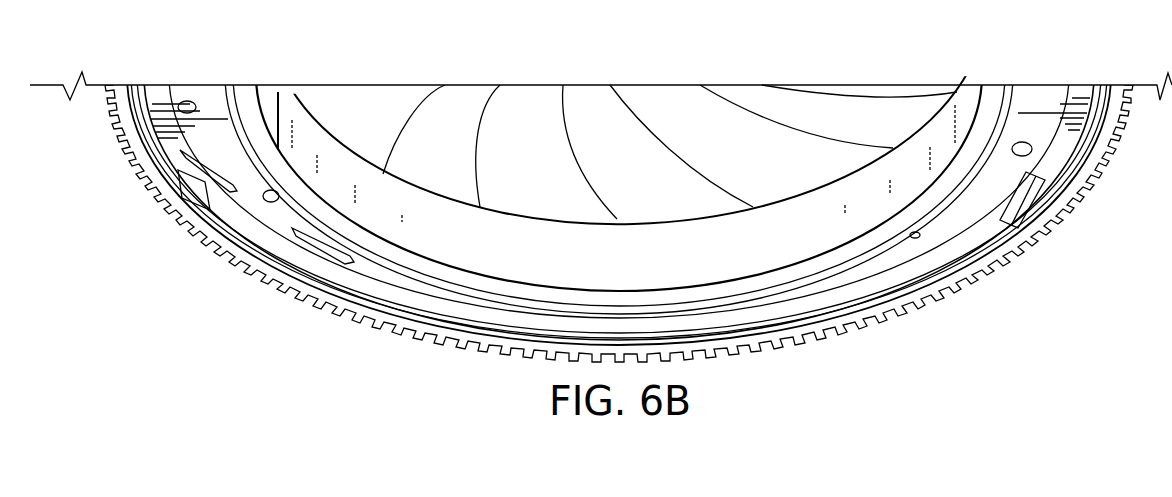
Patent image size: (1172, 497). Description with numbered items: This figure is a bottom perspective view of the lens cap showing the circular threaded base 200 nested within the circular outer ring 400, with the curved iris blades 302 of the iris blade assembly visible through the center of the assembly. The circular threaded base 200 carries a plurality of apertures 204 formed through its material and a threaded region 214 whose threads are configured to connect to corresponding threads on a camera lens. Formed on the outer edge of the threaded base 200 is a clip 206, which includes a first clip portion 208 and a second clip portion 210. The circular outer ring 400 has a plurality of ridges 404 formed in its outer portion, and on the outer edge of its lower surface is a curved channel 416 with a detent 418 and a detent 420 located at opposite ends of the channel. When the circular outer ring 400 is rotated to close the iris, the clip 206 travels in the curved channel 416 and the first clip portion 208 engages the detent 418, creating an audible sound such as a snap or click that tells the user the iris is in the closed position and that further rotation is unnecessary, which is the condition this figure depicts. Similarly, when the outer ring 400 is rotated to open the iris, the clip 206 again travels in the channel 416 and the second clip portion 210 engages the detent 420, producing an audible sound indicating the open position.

The circular threaded base 200 is at (218, 112).
The apertures 204 is at (1031, 156).
The clip 206 is at (240, 260).
The first clip portion 208 is at (183, 160).
The second clip portion 210 is at (318, 262).
The threaded region 214 is at (599, 273).
The curved iris blades 302 is at (717, 161).
The circular outer ring 400 is at (889, 316).
The ridges 404 is at (793, 340).
The curved channel 416 is at (444, 310).
The detent 418 is at (190, 211).
The detent 420 is at (1036, 214).